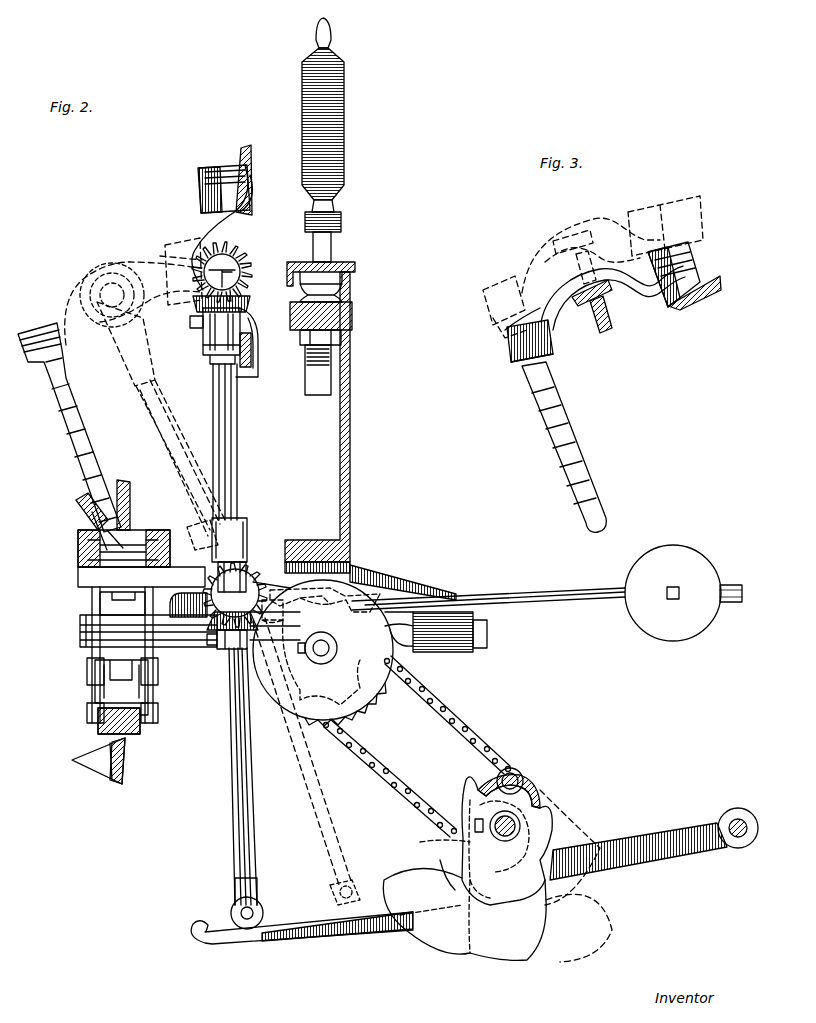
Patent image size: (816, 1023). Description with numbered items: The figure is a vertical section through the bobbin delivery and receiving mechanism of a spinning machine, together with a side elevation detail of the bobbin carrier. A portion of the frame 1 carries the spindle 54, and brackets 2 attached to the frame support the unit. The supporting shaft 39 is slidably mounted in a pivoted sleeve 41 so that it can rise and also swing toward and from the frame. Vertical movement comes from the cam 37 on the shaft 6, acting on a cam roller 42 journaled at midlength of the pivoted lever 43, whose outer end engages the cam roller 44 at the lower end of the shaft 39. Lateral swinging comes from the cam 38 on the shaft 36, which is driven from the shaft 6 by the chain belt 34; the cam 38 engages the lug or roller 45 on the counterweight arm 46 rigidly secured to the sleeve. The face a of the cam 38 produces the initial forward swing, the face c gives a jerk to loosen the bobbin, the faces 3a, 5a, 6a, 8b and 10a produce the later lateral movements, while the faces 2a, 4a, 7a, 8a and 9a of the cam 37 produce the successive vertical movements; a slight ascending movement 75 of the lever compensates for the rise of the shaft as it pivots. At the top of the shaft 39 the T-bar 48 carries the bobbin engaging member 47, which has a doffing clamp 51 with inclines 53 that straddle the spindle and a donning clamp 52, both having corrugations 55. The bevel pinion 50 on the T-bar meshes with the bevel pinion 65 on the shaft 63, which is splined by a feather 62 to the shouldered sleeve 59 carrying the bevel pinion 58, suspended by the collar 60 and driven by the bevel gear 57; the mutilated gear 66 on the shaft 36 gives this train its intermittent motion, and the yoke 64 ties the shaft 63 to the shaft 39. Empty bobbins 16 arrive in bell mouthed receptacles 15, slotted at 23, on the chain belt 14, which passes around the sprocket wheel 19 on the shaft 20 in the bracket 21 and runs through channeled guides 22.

In FIG. 2, the frame 1 is at (351, 422).
In FIG. 2, the brackets 2 is at (278, 584).
In FIG. 2, the cam face 2a is at (560, 830).
In FIG. 2, the cam face 3a is at (347, 689).
In FIG. 2, the cam face 4a is at (542, 932).
In FIG. 2, the cam face 5a is at (317, 707).
In FIG. 2, the shaft 6 is at (505, 841).
In FIG. 2, the cam face 6a is at (292, 667).
In FIG. 2, the cam face 7a is at (424, 848).
In FIG. 2, the cam face 8a is at (458, 799).
In FIG. 2, the cam face 8b is at (320, 662).
In FIG. 2, the cam face 9a is at (492, 782).
In FIG. 2, the cam face 10a is at (321, 605).
In FIG. 2, the chain belt 14 is at (138, 536).
In FIG. 2, the bell mouthed receptacles 15 is at (124, 490).
In FIG. 2, the empty bobbins 16 is at (72, 432).
In FIG. 3, the empty bobbins 16 is at (572, 432).
In FIG. 2, the sprocket wheel 19 is at (90, 656).
In FIG. 2, the shaft 20 is at (422, 640).
In FIG. 2, the bracket 21 is at (193, 650).
In FIG. 2, the channeled guides 22 is at (78, 555).
In FIG. 2, the slot 23 is at (88, 506).
In FIG. 2, the chain belt 34 is at (478, 732).
In FIG. 2, the shaft 36 is at (330, 649).
In FIG. 2, the cams 37 is at (462, 958).
In FIG. 2, the cams 38 is at (376, 700).
In FIG. 2, the supporting shafts 39 is at (238, 462).
In FIG. 2, the sleeve 41 is at (247, 548).
In FIG. 2, the cam rollers 42 is at (520, 778).
In FIG. 2, the levers 43 is at (637, 852).
In FIG. 2, the cam rollers 44 is at (262, 916).
In FIG. 2, the lugs or rollers 45 is at (362, 568).
In FIG. 2, the counterweight arms 46 is at (496, 596).
In FIG. 2, the bobbin engaging members 47 is at (133, 291).
In FIG. 3, the bobbin engaging members 47 is at (565, 336).
In FIG. 2, the T-bar 48 is at (228, 256).
In FIG. 3, the T-bar 48 is at (610, 308).
In FIG. 2, the bevel pinion 50 is at (240, 266).
In FIG. 2, the bobbin clamp 51 is at (201, 187).
In FIG. 3, the bobbin clamp 51 is at (690, 270).
In FIG. 2, the bobbin clamp 52 is at (258, 374).
In FIG. 3, the bobbin clamp 52 is at (512, 368).
In FIG. 2, the inclines 53 is at (238, 164).
In FIG. 3, the inclines 53 is at (700, 290).
In FIG. 2, the spindle 54 is at (326, 246).
In FIG. 2, the corrugations 55 is at (204, 178).
In FIG. 3, the corrugations 55 is at (670, 253).
In FIG. 2, the bevel gear 57 is at (206, 592).
In FIG. 2, the bevel pinion 58 is at (210, 624).
In FIG. 2, the shouldered sleeve 59 is at (270, 584).
In FIG. 2, the collar 60 is at (248, 522).
In FIG. 2, the feather 62 is at (232, 496).
In FIG. 2, the shaft 63 is at (220, 436).
In FIG. 2, the yoke 64 is at (203, 330).
In FIG. 2, the bevel pinion 65 is at (247, 298).
In FIG. 2, the mutilated gear 66 is at (360, 722).
In FIG. 2, the ascending movement 75 is at (334, 894).
In FIG. 2, the cam face a is at (385, 572).
In FIG. 2, the cam face c is at (410, 582).